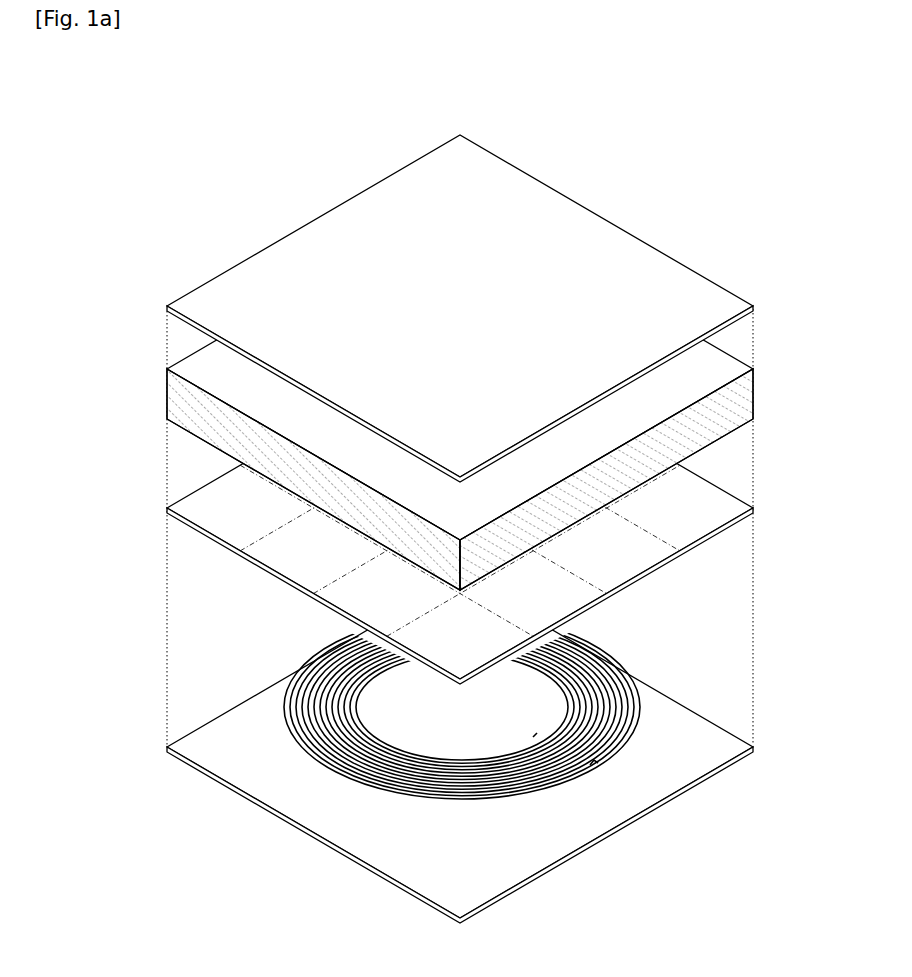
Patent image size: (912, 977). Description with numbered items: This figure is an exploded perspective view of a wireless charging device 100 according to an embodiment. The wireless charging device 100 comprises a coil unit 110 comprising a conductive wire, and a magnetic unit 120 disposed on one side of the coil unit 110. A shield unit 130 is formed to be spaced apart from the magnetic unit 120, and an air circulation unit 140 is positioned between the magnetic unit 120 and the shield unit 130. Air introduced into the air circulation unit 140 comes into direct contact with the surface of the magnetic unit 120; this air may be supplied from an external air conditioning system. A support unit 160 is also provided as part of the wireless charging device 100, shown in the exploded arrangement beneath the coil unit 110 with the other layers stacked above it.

The wireless power transmission module 100 is at (497, 103).
The coil 110 is at (625, 647).
The magnetic sheet / plate 120 is at (712, 498).
The top cover plate 130 is at (718, 303).
The block / spacer 140 is at (700, 406).
The bottom plate 160 is at (720, 738).